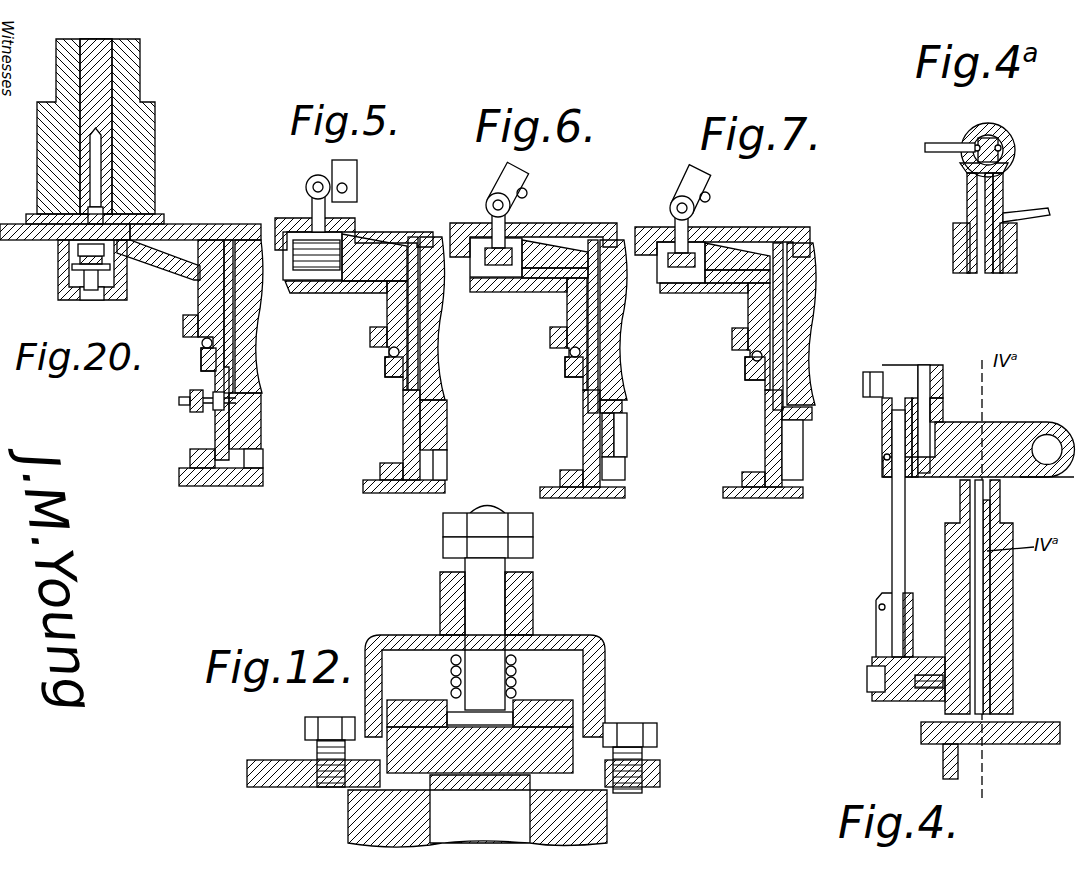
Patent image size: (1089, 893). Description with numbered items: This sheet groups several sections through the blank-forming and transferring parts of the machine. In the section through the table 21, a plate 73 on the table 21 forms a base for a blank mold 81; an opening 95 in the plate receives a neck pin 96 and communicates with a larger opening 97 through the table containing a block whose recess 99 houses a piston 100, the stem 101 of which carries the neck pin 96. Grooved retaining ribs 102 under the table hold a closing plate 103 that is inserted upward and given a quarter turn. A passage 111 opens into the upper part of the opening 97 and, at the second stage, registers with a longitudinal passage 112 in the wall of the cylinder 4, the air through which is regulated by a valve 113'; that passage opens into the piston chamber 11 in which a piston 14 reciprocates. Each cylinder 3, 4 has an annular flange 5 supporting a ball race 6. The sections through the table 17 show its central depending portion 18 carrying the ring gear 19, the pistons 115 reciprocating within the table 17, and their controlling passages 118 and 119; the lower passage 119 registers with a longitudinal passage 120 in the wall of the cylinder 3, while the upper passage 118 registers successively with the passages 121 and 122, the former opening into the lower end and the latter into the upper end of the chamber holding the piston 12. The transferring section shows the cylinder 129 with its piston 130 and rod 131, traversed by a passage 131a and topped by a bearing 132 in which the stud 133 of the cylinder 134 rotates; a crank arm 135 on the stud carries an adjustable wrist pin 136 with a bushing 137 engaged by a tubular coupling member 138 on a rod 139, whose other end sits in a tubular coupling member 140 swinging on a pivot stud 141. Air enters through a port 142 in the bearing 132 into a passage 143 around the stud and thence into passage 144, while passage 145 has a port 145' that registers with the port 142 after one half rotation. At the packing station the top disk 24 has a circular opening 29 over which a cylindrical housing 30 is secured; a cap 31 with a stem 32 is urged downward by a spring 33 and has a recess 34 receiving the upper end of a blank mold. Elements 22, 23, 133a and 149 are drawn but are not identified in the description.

In FIG. 20, the blank mold 81 is at (134, 85).
In FIG. 20, the opening 95 is at (144, 188).
In FIG. 20, the neck pin 96 is at (147, 212).
In FIG. 20, the plate 73 is at (30, 210).
In FIG. 20, the passage 111 is at (190, 229).
In FIG. 20, the cylinder 4 is at (239, 235).
In FIG. 20, the longitudinal passage 112 is at (236, 320).
In FIG. 20, the table 17 is at (166, 255).
In FIG. 6, the table 17 is at (568, 265).
In FIG. 7, the table 17 is at (743, 267).
In FIG. 20, the standard 22 is at (200, 290).
In FIG. 20, the block 23 is at (187, 337).
In FIG. 20, the annular flange 5 is at (201, 365).
In FIG. 5, the annular flange 5 is at (385, 375).
In FIG. 6, the annular flange 5 is at (570, 377).
In FIG. 7, the annular flange 5 is at (745, 377).
In FIG. 20, the valve 113' is at (194, 417).
In FIG. 20, the piston 14 is at (250, 437).
In FIG. 20, the piston chamber 11 is at (230, 425).
In FIG. 5, the piston chamber 11 is at (430, 427).
In FIG. 6, the piston chamber 11 is at (615, 473).
In FIG. 7, the piston chamber 11 is at (793, 438).
In FIG. 20, the grooved retaining rib 102 is at (67, 292).
In FIG. 20, the closing plate 103 is at (88, 294).
In FIG. 20, the piston 100 is at (97, 296).
In FIG. 20, the recess 99 is at (73, 277).
In FIG. 20, the stem 101 is at (88, 264).
In FIG. 20, the opening 97 is at (78, 250).
In FIG. 5, the passage 118 is at (373, 233).
In FIG. 6, the passage 118 is at (553, 240).
In FIG. 7, the passage 118 is at (723, 242).
In FIG. 5, the passage 119 is at (358, 282).
In FIG. 6, the passage 119 is at (532, 292).
In FIG. 7, the passage 119 is at (723, 293).
In FIG. 5, the central depending portion 18 is at (400, 310).
In FIG. 6, the central depending portion 18 is at (580, 323).
In FIG. 7, the central depending portion 18 is at (763, 313).
In FIG. 5, the ring gear 19 is at (370, 336).
In FIG. 6, the ring gear 19 is at (553, 340).
In FIG. 7, the ring gear 19 is at (732, 338).
In FIG. 5, the ball race 6 is at (389, 354).
In FIG. 6, the ball race 6 is at (575, 352).
In FIG. 7, the ball race 6 is at (752, 358).
In FIG. 5, the longitudinal passage 120 is at (413, 357).
In FIG. 5, the cylinder 3 is at (432, 277).
In FIG. 6, the cylinder 3 is at (607, 287).
In FIG. 7, the cylinder 3 is at (797, 250).
In FIG. 5, the piston 12 is at (441, 447).
In FIG. 6, the piston 12 is at (615, 442).
In FIG. 6, the piston 115 is at (497, 267).
In FIG. 7, the piston 115 is at (685, 273).
In FIG. 6, the passage 121 is at (595, 357).
In FIG. 7, the passage 122 is at (781, 325).
In FIG. 4a, the bearing 132 is at (1007, 138).
In FIG. 4, the bearing 132 is at (991, 449).
In FIG. 4a, the passage 143 is at (993, 133).
In FIG. 4a, the passage 145 is at (1020, 132).
In FIG. 4a, the port 145' is at (1037, 154).
In FIG. 4a, the port 142 is at (962, 143).
In FIG. 4a, the passage 144 is at (972, 152).
In FIG. 4a, the stem 133a is at (978, 168).
In FIG. 4a, the rod 131 is at (970, 272).
In FIG. 4, the rod 131 is at (991, 581).
In FIG. 4a, the passage 131a is at (1003, 268).
In FIG. 4, the passage 131a is at (990, 501).
In FIG. 4a, the arm 149 is at (1023, 215).
In FIG. 4, the wrist pin 136 is at (898, 369).
In FIG. 4, the bushing 137 is at (882, 401).
In FIG. 4, the crank arm 135 is at (941, 395).
In FIG. 4, the stud 133 is at (1056, 442).
In FIG. 4, the cylinder 134 is at (1062, 478).
In FIG. 4, the rod 139 is at (892, 514).
In FIG. 4, the tubular coupling member 138 is at (882, 458).
In FIG. 4, the tubular coupling member 140 is at (882, 629).
In FIG. 4, the pivot stud 141 is at (887, 679).
In FIG. 4, the cylinder 129 is at (1013, 642).
In FIG. 4, the piston 130 is at (1010, 716).
In FIG. 12, the stem 32 is at (493, 598).
In FIG. 12, the cylindrical housing 30 is at (600, 642).
In FIG. 12, the spring 33 is at (450, 655).
In FIG. 12, the recess 34 is at (573, 737).
In FIG. 12, the cap 31 is at (417, 730).
In FIG. 12, the circular opening 29 is at (655, 767).
In FIG. 12, the top disk 24 is at (650, 793).
In FIG. 12, the table 21 is at (605, 827).